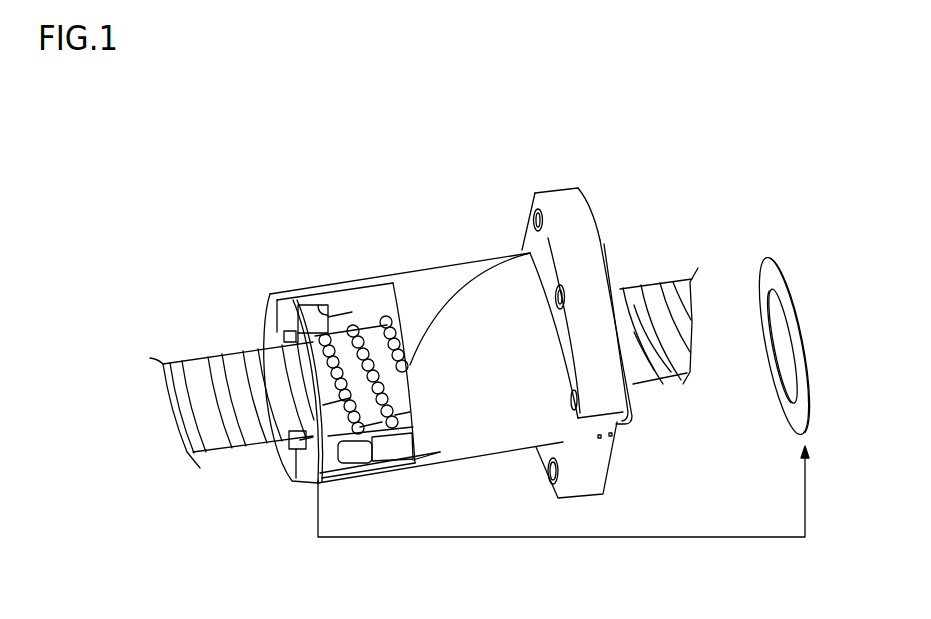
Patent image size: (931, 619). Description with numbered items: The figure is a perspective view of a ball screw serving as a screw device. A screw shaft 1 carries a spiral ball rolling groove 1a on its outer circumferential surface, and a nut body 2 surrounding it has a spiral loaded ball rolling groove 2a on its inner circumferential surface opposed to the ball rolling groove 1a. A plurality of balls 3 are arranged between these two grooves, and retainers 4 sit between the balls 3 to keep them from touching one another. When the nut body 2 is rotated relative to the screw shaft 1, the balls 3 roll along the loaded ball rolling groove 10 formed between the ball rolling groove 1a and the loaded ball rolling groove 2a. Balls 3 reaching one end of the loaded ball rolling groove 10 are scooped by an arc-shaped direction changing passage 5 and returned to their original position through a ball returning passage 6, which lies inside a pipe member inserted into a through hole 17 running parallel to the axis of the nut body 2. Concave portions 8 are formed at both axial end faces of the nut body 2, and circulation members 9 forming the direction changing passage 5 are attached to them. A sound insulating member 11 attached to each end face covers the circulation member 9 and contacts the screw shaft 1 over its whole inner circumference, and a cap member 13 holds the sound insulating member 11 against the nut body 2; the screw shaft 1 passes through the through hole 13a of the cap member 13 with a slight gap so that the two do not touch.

The screw shaft 1 is at (201, 367).
The ball rolling groove 1a is at (200, 363).
The nut body 2 is at (438, 285).
The loaded ball rolling groove 2a is at (358, 327).
The balls 3 is at (370, 350).
The retainers 4 is at (383, 375).
The direction changing passage 5 is at (347, 470).
The ball returning passage 6 is at (397, 452).
The concave portions 8 is at (320, 312).
The circulation member 9 is at (333, 452).
The loaded ball rolling groove 10 is at (335, 405).
The sound insulating member 11 is at (293, 300).
The cap member 13 is at (283, 467).
The through hole 13a is at (318, 480).
The through hole 17 is at (415, 447).